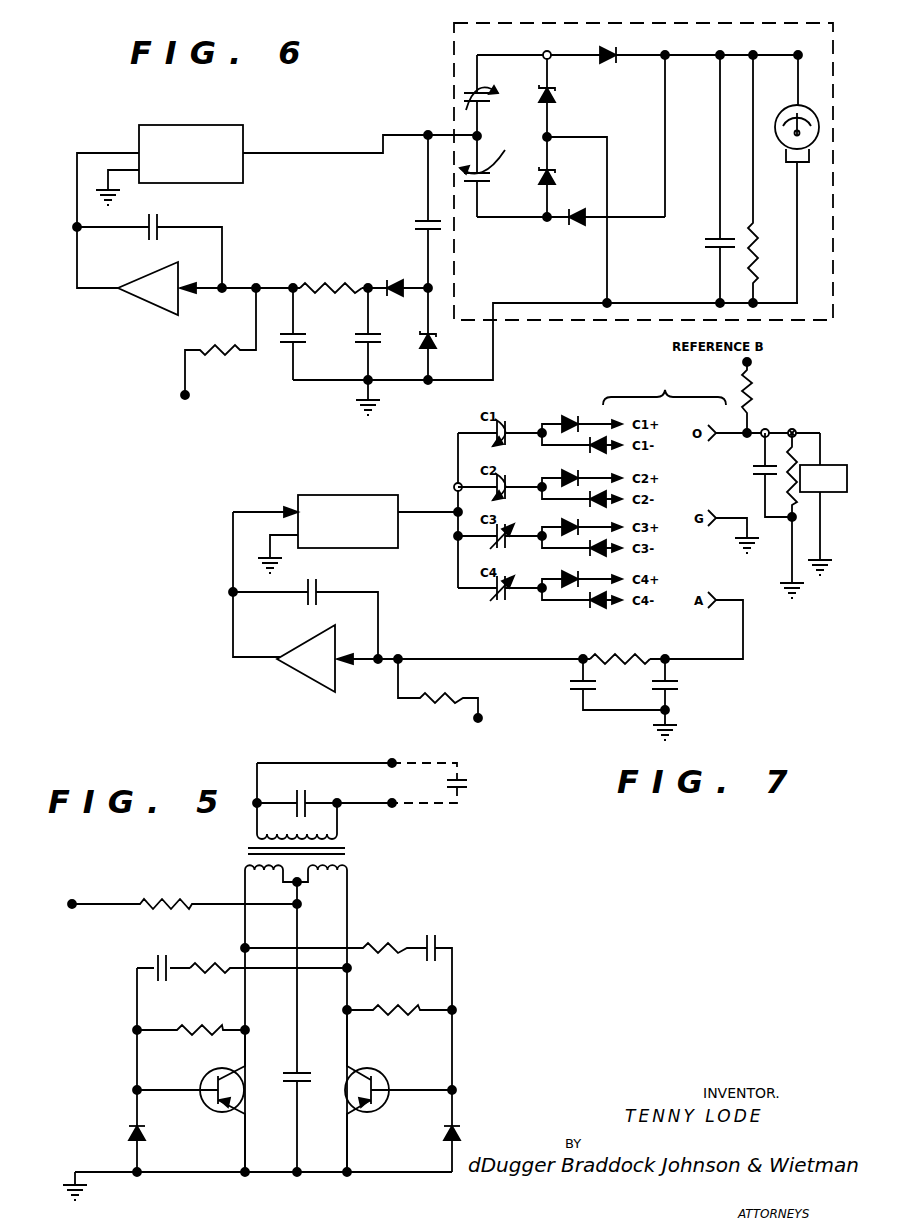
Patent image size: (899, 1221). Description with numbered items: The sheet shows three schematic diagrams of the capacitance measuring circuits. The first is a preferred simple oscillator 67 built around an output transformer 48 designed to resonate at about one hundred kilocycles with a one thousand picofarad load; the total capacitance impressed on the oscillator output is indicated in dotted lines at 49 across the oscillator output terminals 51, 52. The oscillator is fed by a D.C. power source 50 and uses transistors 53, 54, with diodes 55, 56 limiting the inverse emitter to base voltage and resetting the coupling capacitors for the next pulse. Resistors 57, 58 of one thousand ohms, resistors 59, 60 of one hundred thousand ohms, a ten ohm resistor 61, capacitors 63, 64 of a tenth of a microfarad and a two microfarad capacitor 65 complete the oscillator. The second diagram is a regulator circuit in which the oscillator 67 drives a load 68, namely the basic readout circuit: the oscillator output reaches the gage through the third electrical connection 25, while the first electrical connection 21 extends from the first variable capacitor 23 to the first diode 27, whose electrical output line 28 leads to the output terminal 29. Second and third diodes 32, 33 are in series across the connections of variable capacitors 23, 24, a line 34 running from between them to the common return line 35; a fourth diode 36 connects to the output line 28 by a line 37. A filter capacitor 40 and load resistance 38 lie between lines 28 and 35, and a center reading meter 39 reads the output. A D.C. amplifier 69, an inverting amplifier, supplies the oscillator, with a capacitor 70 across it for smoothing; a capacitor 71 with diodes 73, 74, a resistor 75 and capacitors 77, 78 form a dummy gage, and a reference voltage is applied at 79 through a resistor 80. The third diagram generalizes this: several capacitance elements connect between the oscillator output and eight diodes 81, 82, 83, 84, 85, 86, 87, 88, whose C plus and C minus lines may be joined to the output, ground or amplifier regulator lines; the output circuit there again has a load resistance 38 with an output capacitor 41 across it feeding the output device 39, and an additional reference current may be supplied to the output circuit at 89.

In FIG. 6, the first electrical connection 21 is at (487, 55).
In FIG. 6, the first variable capacitor 23 is at (490, 95).
In FIG. 6, the variable capacitor 24 is at (489, 176).
In FIG. 6, the third electrical connection 25 is at (428, 131).
In FIG. 6, the first diode 27 is at (605, 62).
In FIG. 6, the electrical output line 28 is at (686, 55).
In FIG. 6, the output terminal 29 is at (798, 54).
In FIG. 7, the output terminal 29 is at (795, 430).
In FIG. 6, the second diode 32 is at (555, 100).
In FIG. 6, the third diode 33 is at (558, 176).
In FIG. 6, the line 34 is at (609, 288).
In FIG. 6, the common return line 35 is at (568, 302).
In FIG. 6, the fourth diode 36 is at (578, 228).
In FIG. 6, the line 37 is at (666, 158).
In FIG. 6, the load resistance 38 is at (758, 276).
In FIG. 7, the load resistance 38 is at (790, 486).
In FIG. 6, the center reading meter 39 is at (786, 160).
In FIG. 7, the center reading meter 39 is at (833, 465).
In FIG. 6, the filter capacitor 40 is at (709, 240).
In FIG. 7, the capacitor 41 is at (757, 470).
In FIG. 5, the output transformer 48 is at (355, 853).
In FIG. 5, the total capacitance of the output circuit 49 is at (465, 789).
In FIG. 6, the D.C. power source 50 is at (139, 148).
In FIG. 7, the D.C. power source 50 is at (250, 512).
In FIG. 5, the D.C. power source 50 is at (72, 906).
In FIG. 6, the oscillator output terminal 51 is at (354, 151).
In FIG. 5, the oscillator output terminal 51 is at (355, 762).
In FIG. 5, the oscillator output terminal 52 is at (340, 807).
In FIG. 5, the transistor 53 is at (240, 1075).
In FIG. 5, the transistor 54 is at (392, 1083).
In FIG. 5, the diode 55 is at (125, 1138).
In FIG. 5, the diode 56 is at (462, 1131).
In FIG. 5, the resistor 57 is at (223, 963).
In FIG. 5, the resistor 58 is at (386, 946).
In FIG. 5, the resistor 59 is at (195, 1020).
In FIG. 5, the resistor 60 is at (398, 1006).
In FIG. 5, the resistor 61 is at (145, 900).
In FIG. 5, the capacitor 63 is at (158, 955).
In FIG. 5, the capacitor 64 is at (438, 940).
In FIG. 5, the capacitor 65 is at (302, 1072).
In FIG. 6, the oscillator 67 is at (245, 133).
In FIG. 7, the oscillator 67 is at (370, 496).
In FIG. 5, the oscillator 67 is at (482, 954).
In FIG. 6, the load 68 is at (454, 32).
In FIG. 6, the D.C. amplifier 69 is at (156, 272).
In FIG. 7, the D.C. amplifier 69 is at (308, 646).
In FIG. 6, the capacitor 70 is at (158, 226).
In FIG. 7, the capacitor 70 is at (316, 590).
In FIG. 6, the capacitor 71 is at (413, 222).
In FIG. 6, the diode 73 is at (420, 350).
In FIG. 6, the diode 74 is at (395, 279).
In FIG. 6, the resistor 75 is at (330, 285).
In FIG. 7, the resistor 75 is at (618, 658).
In FIG. 6, the capacitor 77 is at (298, 334).
In FIG. 7, the capacitor 77 is at (590, 690).
In FIG. 6, the capacitor 78 is at (373, 334).
In FIG. 7, the capacitor 78 is at (672, 690).
In FIG. 6, the reference voltage input 79 is at (190, 396).
In FIG. 7, the reference voltage input 79 is at (485, 718).
In FIG. 6, the resistor 80 is at (232, 345).
In FIG. 7, the resistor 80 is at (426, 696).
In FIG. 7, the diode 81 is at (569, 416).
In FIG. 7, the diode 82 is at (590, 447).
In FIG. 7, the diode 83 is at (579, 476).
In FIG. 7, the diode 84 is at (590, 501).
In FIG. 7, the diode 85 is at (586, 527).
In FIG. 7, the diode 86 is at (590, 551).
In FIG. 7, the diode 87 is at (576, 579).
In FIG. 7, the diode 88 is at (596, 604).
In FIG. 7, the reference B input 89 is at (752, 364).